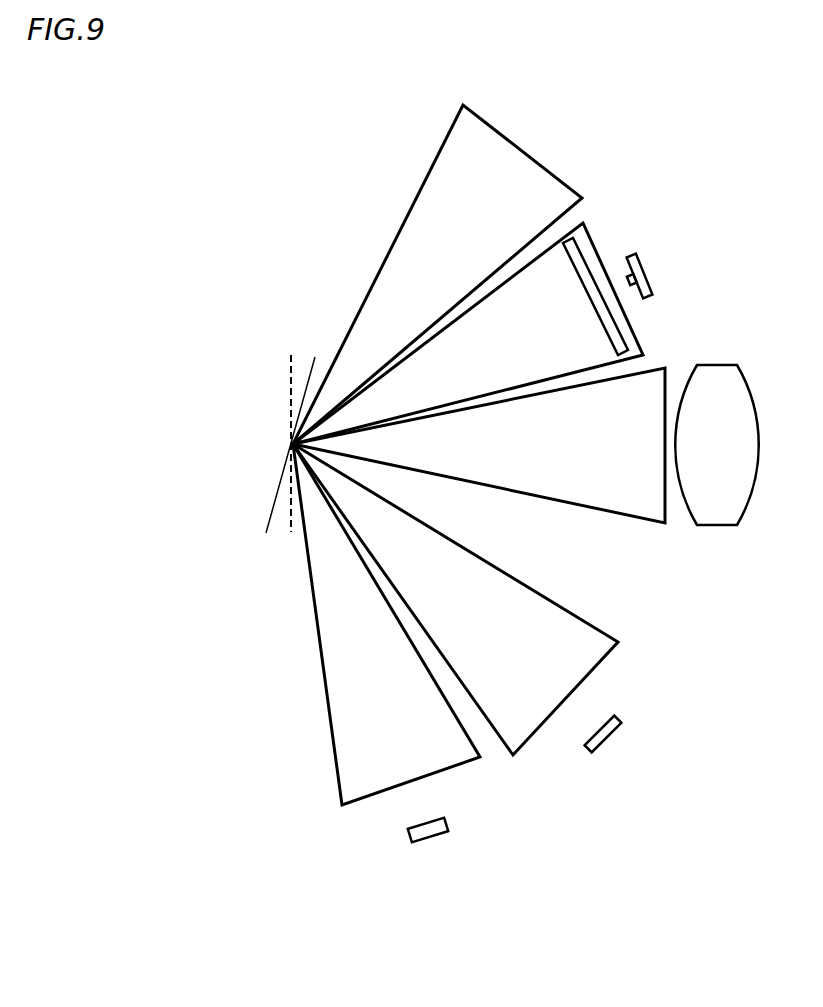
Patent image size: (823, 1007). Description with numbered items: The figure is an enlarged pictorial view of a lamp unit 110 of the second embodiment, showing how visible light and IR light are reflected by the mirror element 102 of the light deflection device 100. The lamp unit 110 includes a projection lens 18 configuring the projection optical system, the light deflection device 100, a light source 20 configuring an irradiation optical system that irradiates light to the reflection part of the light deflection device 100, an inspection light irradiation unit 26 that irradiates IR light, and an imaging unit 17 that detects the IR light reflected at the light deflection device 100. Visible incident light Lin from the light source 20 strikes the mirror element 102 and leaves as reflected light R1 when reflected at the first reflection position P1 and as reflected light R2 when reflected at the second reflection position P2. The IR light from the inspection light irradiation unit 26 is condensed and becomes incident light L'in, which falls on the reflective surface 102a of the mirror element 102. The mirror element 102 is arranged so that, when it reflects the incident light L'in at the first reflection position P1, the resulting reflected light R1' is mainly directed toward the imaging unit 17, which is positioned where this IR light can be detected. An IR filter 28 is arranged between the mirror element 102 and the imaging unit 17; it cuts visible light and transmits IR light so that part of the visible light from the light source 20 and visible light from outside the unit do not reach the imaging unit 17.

The light deflection device 100 is at (242, 445).
The mirror element 102 is at (280, 445).
The reflective surface 102a is at (298, 495).
The first reflection position P1 is at (268, 536).
The second reflection position P2 is at (290, 347).
The reflected light R2 is at (458, 150).
The reflected light R1' is at (468, 281).
The IR filter 28 is at (588, 257).
The imaging unit 17 is at (648, 264).
The projection lens 18 is at (716, 365).
The reflected light R1 is at (479, 477).
The incident light Lin is at (585, 658).
The light source 20 is at (612, 738).
The incident light L'in is at (347, 624).
The inspection light irradiation unit 26 is at (410, 832).
The lamp unit 110 is at (498, 942).